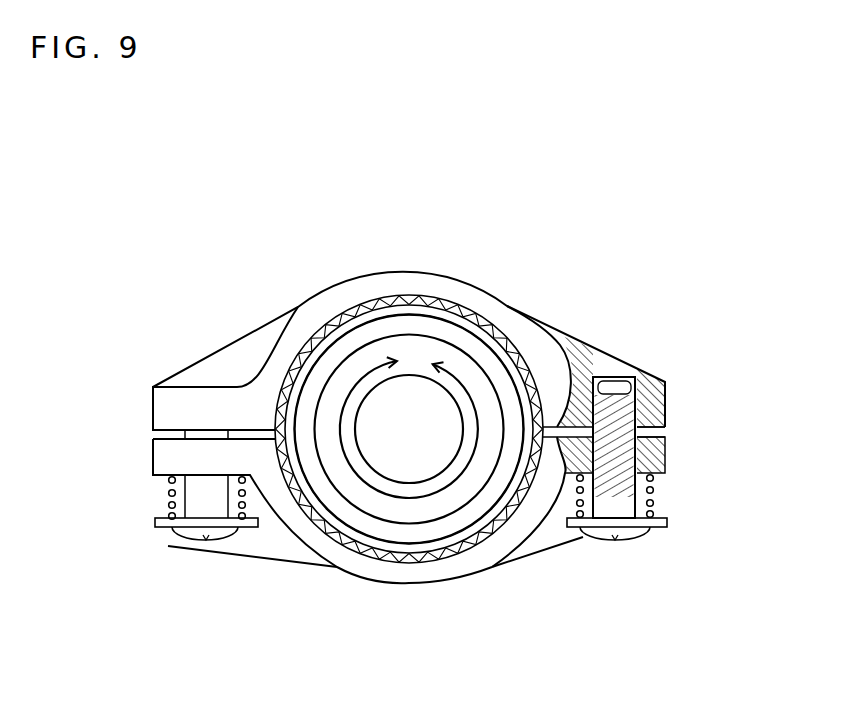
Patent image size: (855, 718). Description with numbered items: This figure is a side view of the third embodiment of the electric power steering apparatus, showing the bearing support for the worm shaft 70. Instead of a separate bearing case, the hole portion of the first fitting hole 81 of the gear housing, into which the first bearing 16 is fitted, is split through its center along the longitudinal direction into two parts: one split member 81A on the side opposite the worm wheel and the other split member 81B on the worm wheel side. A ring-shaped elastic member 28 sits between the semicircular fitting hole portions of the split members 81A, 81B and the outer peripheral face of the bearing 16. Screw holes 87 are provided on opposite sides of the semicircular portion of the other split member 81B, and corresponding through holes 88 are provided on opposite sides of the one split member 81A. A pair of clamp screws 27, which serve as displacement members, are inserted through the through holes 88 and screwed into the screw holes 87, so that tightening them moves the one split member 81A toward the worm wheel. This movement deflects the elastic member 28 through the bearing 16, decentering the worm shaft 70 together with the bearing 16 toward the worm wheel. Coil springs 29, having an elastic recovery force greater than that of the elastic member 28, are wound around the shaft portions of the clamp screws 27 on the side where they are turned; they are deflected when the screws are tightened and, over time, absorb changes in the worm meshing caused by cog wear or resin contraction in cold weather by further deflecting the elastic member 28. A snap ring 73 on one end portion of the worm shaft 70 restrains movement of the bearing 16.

The first bearing 16 is at (380, 530).
The clamp screws 27 is at (197, 516).
The ring-shaped elastic member 28 is at (424, 550).
The coil springs 29 is at (165, 511).
The worm shaft 70 is at (415, 378).
The snap ring 73 is at (363, 473).
The first fitting hole 81 is at (463, 537).
The one split member 81A is at (523, 537).
The other split member 81B is at (507, 304).
The screw holes 87 is at (604, 393).
The through holes 88 is at (668, 457).